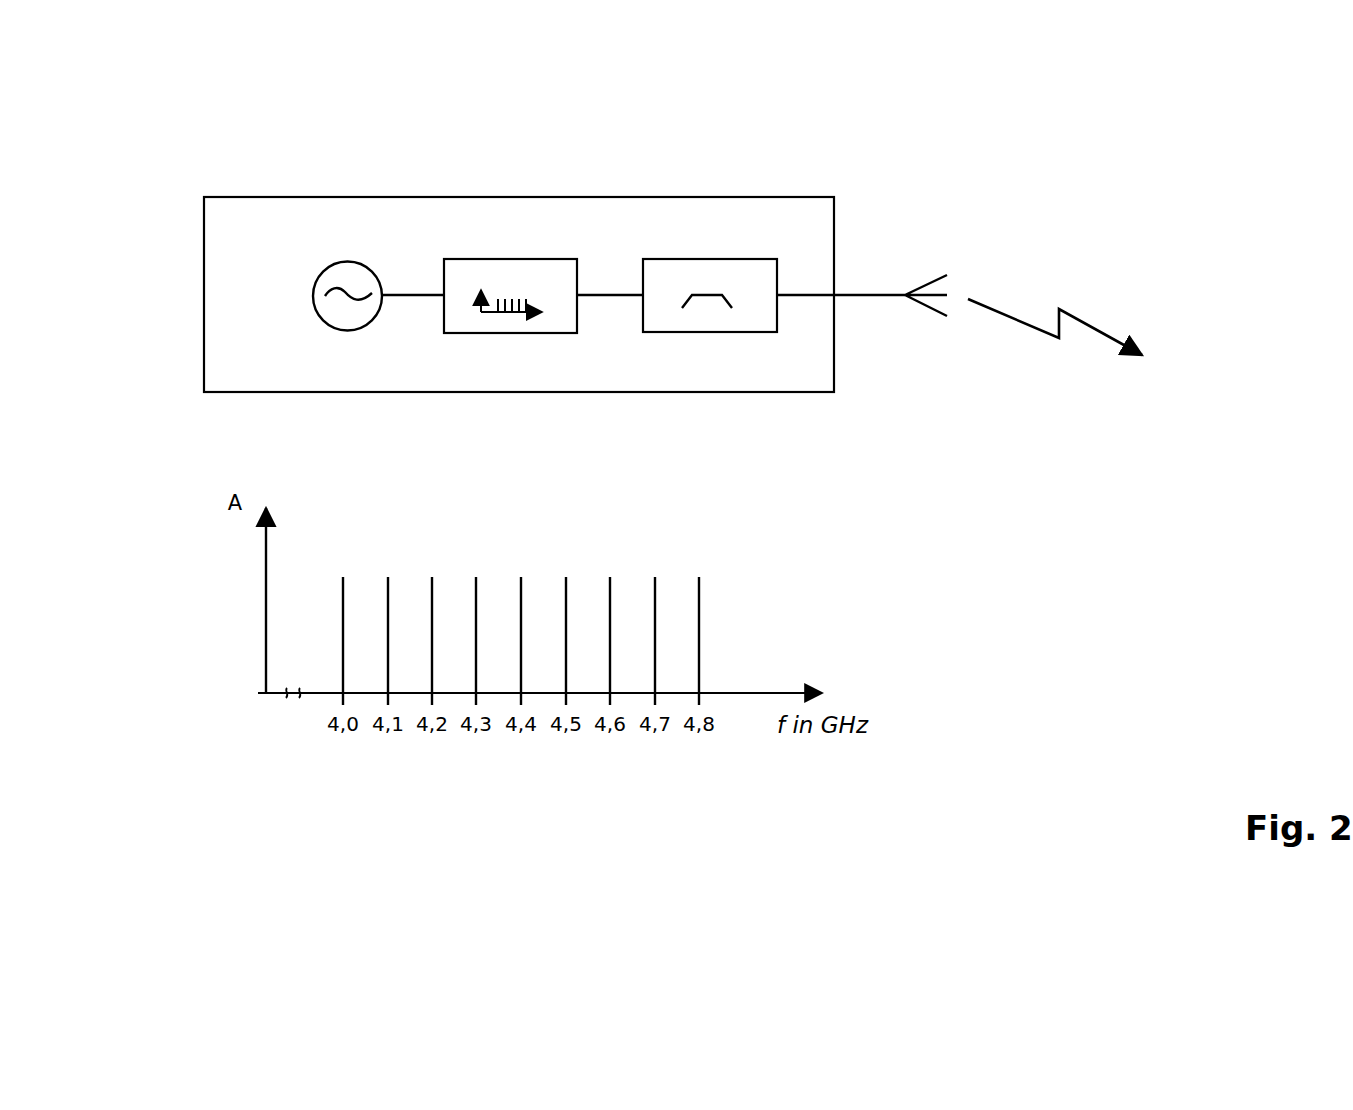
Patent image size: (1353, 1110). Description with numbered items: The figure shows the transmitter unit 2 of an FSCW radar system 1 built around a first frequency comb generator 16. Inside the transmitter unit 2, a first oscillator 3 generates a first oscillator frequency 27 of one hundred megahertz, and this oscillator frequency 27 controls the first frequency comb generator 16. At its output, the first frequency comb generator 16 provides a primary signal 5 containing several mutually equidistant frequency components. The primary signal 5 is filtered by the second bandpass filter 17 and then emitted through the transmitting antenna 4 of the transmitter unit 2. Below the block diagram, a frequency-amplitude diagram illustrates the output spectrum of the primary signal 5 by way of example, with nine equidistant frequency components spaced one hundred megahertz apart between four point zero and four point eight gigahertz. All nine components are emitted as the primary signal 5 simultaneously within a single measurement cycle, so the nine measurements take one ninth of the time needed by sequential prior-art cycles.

The FSCW radar system 1 is at (171, 157).
The transmitter unit 2 is at (247, 243).
The first oscillator 3 is at (348, 276).
The first oscillator frequency 27 is at (411, 292).
The first frequency comb generator 16 is at (541, 278).
The second bandpass filter 17 is at (750, 275).
The transmitting antenna 4 is at (925, 270).
The primary signal 5 is at (1045, 292).